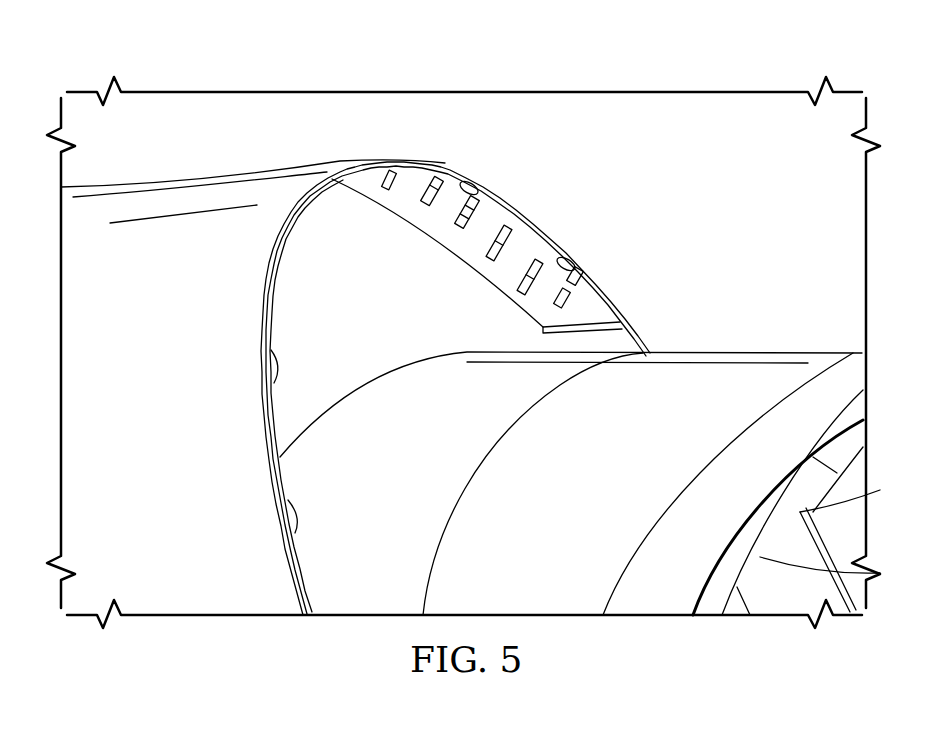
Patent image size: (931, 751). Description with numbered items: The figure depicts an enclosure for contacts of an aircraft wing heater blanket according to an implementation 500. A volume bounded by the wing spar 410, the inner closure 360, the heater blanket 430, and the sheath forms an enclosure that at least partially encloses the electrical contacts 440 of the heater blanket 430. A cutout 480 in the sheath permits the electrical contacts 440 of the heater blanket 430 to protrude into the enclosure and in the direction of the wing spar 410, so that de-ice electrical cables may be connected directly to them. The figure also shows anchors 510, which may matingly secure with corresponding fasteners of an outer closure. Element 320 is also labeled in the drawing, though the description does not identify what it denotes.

The implementation 500 is at (636, 60).
The inner closure 360 is at (390, 338).
The heater blanket 430 is at (522, 214).
The door 320 is at (641, 338).
The cutout 480 is at (590, 304).
The electrical contacts 440 is at (398, 172).
The anchors 510 is at (480, 184).
The wing spar 410 is at (772, 353).